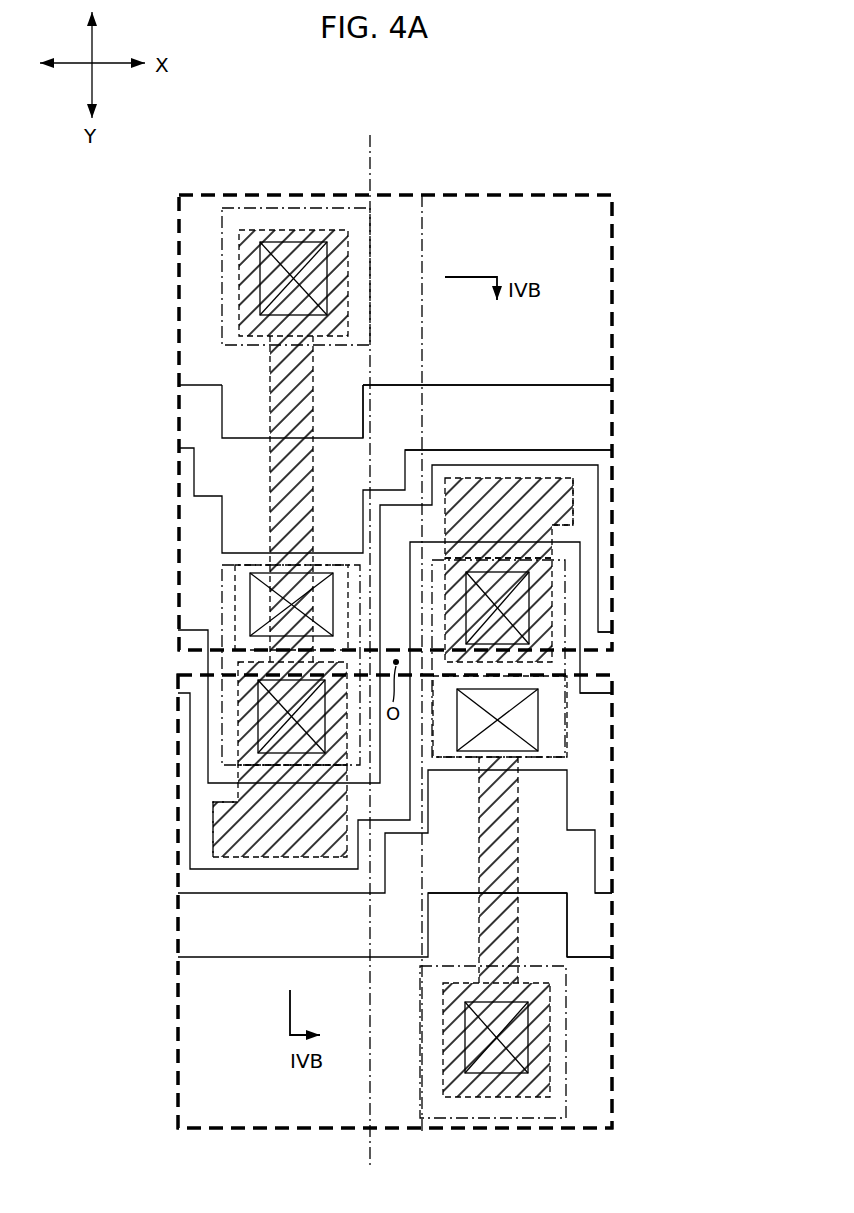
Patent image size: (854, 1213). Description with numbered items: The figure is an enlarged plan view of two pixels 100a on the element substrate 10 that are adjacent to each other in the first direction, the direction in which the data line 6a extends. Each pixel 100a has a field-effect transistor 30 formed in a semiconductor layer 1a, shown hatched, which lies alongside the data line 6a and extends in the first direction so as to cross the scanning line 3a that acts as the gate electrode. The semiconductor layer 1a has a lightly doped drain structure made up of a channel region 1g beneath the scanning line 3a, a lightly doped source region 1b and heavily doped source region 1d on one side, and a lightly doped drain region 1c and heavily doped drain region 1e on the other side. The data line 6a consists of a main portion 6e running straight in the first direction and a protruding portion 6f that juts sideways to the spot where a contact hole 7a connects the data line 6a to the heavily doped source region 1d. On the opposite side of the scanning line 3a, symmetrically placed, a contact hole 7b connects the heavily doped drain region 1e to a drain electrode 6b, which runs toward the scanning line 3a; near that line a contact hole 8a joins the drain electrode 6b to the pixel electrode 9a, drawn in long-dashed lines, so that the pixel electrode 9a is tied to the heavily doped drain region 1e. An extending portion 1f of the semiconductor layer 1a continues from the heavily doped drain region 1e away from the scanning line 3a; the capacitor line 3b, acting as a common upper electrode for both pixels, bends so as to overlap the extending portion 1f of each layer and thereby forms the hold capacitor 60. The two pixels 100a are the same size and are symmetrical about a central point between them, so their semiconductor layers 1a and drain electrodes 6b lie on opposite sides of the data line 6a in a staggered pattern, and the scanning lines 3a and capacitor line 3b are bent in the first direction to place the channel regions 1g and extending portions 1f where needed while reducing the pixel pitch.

The element substrate 10 is at (472, 76).
The pixel 100a is at (562, 366).
The semiconductor layer 1a is at (652, 772).
The lightly doped source region 1b is at (282, 410).
The lightly doped drain region 1c is at (250, 573).
The heavily doped source region 1d is at (252, 323).
The heavily doped drain region 1e is at (260, 735).
The extending portion 1f is at (213, 802).
The channel region 1g is at (285, 477).
The scanning line 3a is at (632, 387).
The capacitor line 3b is at (632, 632).
The data line 6a is at (390, 641).
The drain electrode 6b is at (330, 700).
The main portion 6e is at (425, 215).
The protruding portion 6f is at (232, 208).
The contact hole 7a is at (295, 305).
The contact hole 7b is at (258, 702).
The contact hole 8a is at (255, 598).
The pixel electrode 9a is at (615, 483).
The field-effect transistor 30 is at (352, 368).
The hold capacitor 60 is at (222, 832).